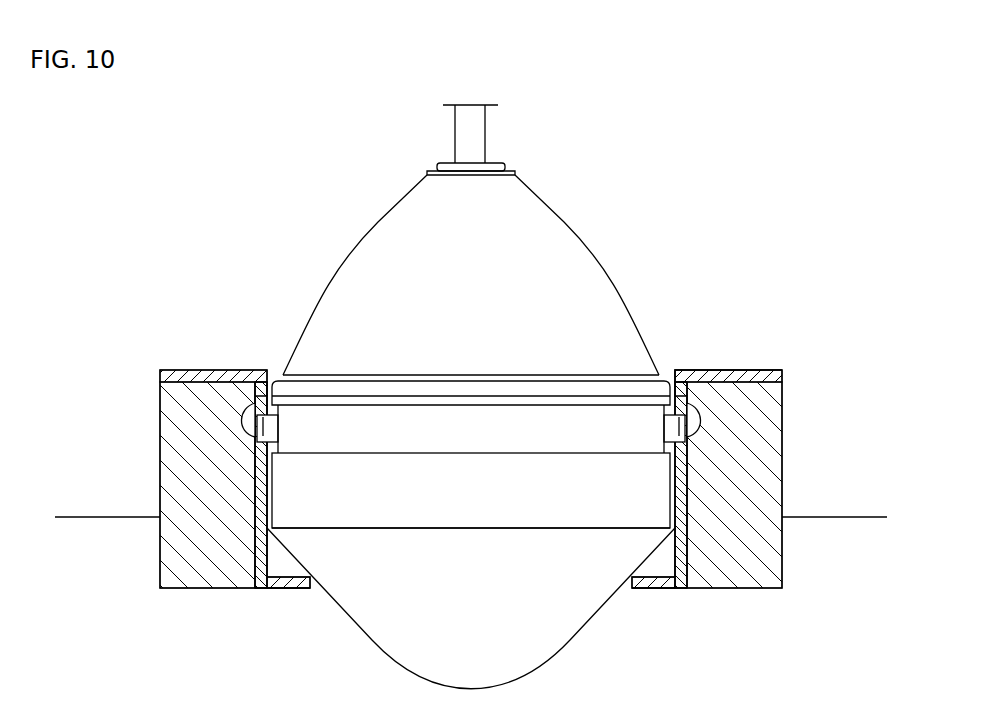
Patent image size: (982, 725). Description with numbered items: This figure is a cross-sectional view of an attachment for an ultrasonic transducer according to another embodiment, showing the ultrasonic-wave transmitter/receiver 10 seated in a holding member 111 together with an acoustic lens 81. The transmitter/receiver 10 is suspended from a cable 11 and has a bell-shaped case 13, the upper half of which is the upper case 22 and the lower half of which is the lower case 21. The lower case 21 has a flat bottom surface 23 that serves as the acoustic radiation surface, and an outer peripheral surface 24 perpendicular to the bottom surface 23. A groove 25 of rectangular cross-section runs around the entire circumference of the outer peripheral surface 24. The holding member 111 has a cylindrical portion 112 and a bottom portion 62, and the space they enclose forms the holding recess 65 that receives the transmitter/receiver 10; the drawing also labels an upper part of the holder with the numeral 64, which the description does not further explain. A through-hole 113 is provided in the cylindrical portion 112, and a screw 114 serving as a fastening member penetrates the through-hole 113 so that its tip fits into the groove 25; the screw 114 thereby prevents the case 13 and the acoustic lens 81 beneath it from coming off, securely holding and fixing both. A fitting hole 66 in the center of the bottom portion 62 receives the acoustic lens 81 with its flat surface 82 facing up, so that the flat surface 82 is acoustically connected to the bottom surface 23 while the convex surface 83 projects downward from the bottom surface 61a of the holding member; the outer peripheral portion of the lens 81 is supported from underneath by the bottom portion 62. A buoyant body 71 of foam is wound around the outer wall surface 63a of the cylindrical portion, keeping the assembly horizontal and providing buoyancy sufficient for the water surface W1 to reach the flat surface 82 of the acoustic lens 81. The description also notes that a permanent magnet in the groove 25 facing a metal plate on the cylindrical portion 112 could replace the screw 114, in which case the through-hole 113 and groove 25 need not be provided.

The ultrasonic-wave transmitter/receiver 10 is at (471, 406).
The cable 11 is at (463, 137).
The case 13 is at (571, 253).
The lower case 21 is at (352, 529).
The upper case 22 is at (347, 276).
The bottom surface 23 is at (398, 530).
The outer peripheral surface 24 is at (266, 494).
The groove 25 is at (549, 423).
The bottom surface 61a is at (271, 592).
The bottom portion 62 is at (293, 592).
The outer wall surface 63a is at (256, 553).
The holder 64 is at (757, 372).
The holding recess 65 is at (665, 375).
The fitting hole 66 is at (623, 592).
The buoyant body 71 is at (183, 489).
The acoustic lens 81 is at (373, 633).
The flat surface 82 is at (567, 526).
The convex surface 83 is at (576, 649).
The holding member 111 is at (190, 378).
The cylindrical portion 112 is at (679, 507).
The through-hole 113 is at (253, 405).
The screw 114 is at (250, 437).
The water surface W1 is at (866, 516).